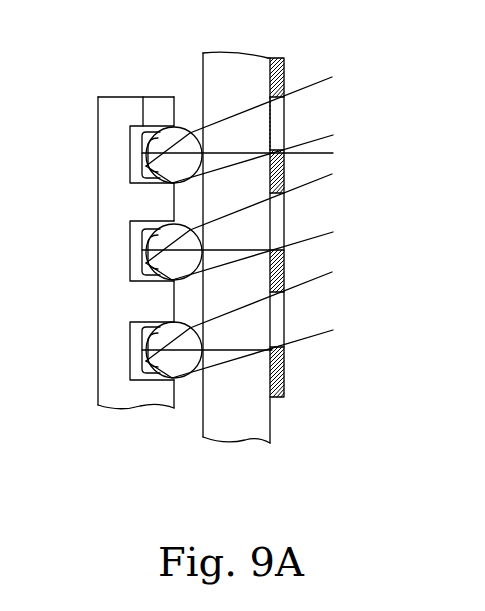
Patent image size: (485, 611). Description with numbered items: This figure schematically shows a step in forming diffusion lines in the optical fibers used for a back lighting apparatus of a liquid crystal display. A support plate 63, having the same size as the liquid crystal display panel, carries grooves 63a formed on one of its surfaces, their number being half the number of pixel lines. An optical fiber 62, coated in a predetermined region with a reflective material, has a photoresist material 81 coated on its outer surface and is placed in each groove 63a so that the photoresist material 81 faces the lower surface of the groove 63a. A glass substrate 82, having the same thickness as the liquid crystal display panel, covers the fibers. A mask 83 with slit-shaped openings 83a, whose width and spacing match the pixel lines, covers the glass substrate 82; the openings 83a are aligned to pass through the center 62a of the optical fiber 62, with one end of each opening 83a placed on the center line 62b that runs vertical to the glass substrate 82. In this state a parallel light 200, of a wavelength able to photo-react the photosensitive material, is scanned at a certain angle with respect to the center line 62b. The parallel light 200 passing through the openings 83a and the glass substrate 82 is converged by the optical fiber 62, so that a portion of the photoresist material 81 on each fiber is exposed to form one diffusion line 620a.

The support plate 63 is at (110, 117).
The groove 63a is at (143, 98).
The optical fiber 62 is at (178, 122).
The center of the optical fiber 62a is at (140, 185).
The center line 62b is at (333, 137).
The diffusion line 620a is at (130, 160).
The photoresist material 81 is at (136, 165).
The glass substrate 82 is at (245, 73).
The mask 83 is at (284, 60).
The slit-shaped opening 83a is at (277, 130).
The parallel light 200 is at (331, 78).